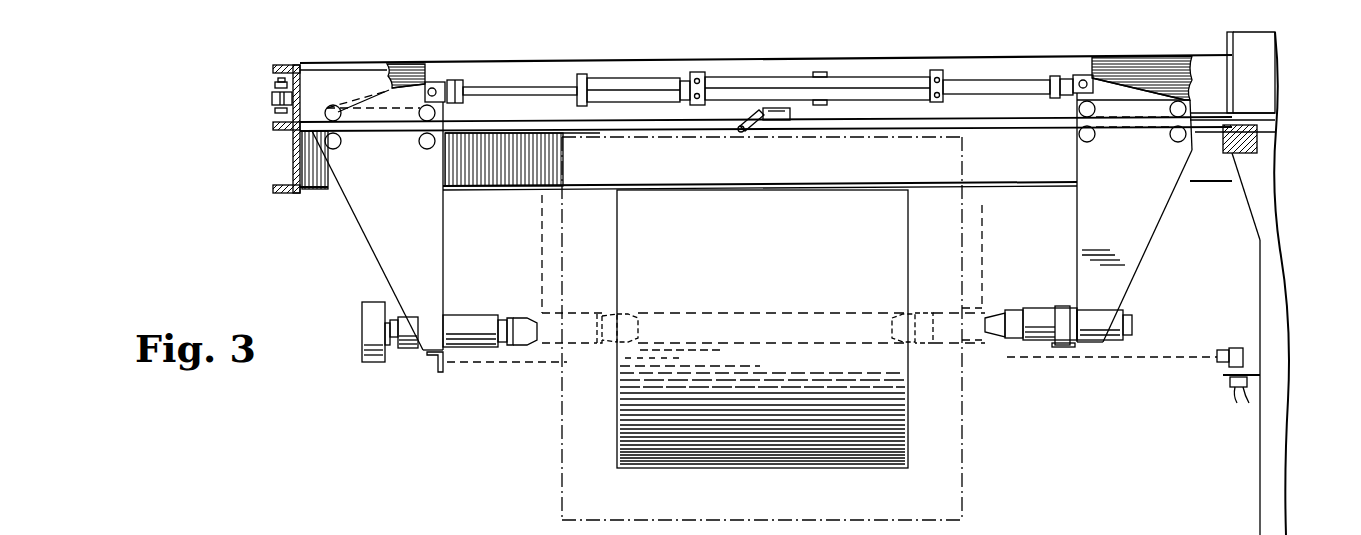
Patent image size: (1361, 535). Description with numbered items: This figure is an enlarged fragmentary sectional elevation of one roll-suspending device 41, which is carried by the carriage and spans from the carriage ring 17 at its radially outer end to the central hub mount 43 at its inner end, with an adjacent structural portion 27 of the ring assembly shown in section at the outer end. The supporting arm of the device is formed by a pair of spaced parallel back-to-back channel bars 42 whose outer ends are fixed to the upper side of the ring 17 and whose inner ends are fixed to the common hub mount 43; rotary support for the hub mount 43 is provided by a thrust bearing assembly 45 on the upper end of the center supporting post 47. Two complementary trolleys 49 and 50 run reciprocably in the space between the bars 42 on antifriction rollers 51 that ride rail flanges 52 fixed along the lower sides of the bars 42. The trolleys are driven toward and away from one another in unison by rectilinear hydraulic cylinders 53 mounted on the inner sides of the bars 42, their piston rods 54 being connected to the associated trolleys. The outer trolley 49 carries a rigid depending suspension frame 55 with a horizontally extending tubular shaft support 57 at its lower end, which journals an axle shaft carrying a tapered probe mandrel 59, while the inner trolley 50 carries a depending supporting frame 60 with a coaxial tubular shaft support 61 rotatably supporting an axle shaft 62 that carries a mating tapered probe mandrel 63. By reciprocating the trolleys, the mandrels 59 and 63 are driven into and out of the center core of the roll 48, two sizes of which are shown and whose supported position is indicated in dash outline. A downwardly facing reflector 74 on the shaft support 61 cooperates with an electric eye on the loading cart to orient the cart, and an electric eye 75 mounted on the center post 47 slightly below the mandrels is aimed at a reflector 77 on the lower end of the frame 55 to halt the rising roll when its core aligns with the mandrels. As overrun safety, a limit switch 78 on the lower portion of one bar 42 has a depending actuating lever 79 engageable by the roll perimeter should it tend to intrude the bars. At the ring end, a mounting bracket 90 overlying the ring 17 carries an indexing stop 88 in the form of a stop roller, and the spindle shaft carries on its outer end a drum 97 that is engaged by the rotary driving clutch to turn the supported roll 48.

The carriage ring 17 is at (316, 186).
The side wall 27 is at (292, 166).
The roll-suspending device 41 is at (626, 58).
The channel bars 42 is at (330, 71).
The hub mount 43 is at (1229, 48).
The thrust bearing assembly 45 is at (1228, 153).
The center supporting post 47 is at (1287, 266).
The roll 48 is at (905, 442).
The trolley 49 is at (418, 90).
The trolley 50 is at (1125, 100).
The antifriction rollers 51 is at (425, 118).
The rail flanges 52 is at (1012, 128).
The hydraulic cylinders 53 is at (660, 79).
The piston rods 54 is at (552, 82).
The suspension frame 55 is at (542, 248).
The tubular shaft support 57 is at (470, 316).
The tapered probe mandrel 59 is at (597, 350).
The supporting frame 60 is at (1082, 248).
The tubular shaft support 61 is at (1042, 310).
The axle shaft 62 is at (1014, 311).
The tapered probe mandrel 63 is at (997, 339).
The reflector 74 is at (1063, 348).
The electric eye 75 is at (1223, 350).
The reflector 77 is at (445, 370).
The limit switch 78 is at (776, 121).
The actuating lever 79 is at (742, 132).
The indexing stop 88 is at (272, 99).
The mounting bracket 90 is at (292, 80).
The drum 97 is at (368, 329).